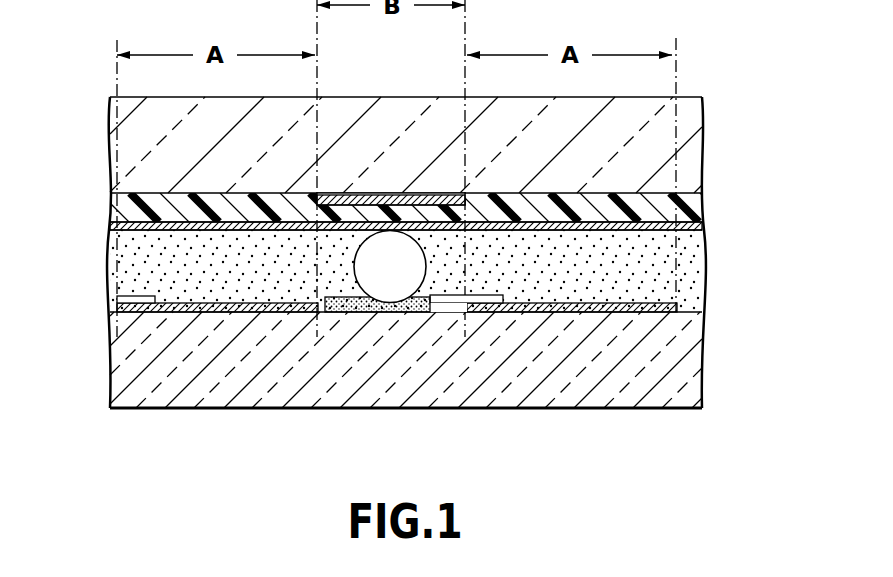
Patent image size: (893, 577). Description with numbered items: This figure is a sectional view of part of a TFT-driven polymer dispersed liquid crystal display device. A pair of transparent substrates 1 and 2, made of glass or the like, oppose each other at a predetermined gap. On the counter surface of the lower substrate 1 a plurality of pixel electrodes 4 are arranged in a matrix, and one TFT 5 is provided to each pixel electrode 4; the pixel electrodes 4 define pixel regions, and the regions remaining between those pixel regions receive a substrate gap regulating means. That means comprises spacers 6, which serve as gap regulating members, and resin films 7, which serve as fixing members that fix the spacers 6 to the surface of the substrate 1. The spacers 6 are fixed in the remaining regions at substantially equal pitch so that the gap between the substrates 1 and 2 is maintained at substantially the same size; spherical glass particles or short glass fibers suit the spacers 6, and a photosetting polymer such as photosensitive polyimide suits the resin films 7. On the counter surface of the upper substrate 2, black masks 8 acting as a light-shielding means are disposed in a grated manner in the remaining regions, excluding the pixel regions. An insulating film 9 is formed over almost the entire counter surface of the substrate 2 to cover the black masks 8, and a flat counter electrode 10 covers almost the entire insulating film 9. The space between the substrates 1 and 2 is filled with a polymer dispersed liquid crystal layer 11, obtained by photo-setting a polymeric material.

The transparent substrate 1 is at (572, 375).
The transparent substrate 2 is at (684, 138).
The pixel electrode 4 is at (210, 305).
The TFT 5 is at (140, 298).
The spacer 6 is at (398, 248).
The resin film 7 is at (340, 307).
The black mask 8 is at (345, 200).
The insulating film 9 is at (694, 208).
The counter electrode 10 is at (650, 228).
The polymer dispersed liquid crystal layer 11 is at (145, 252).